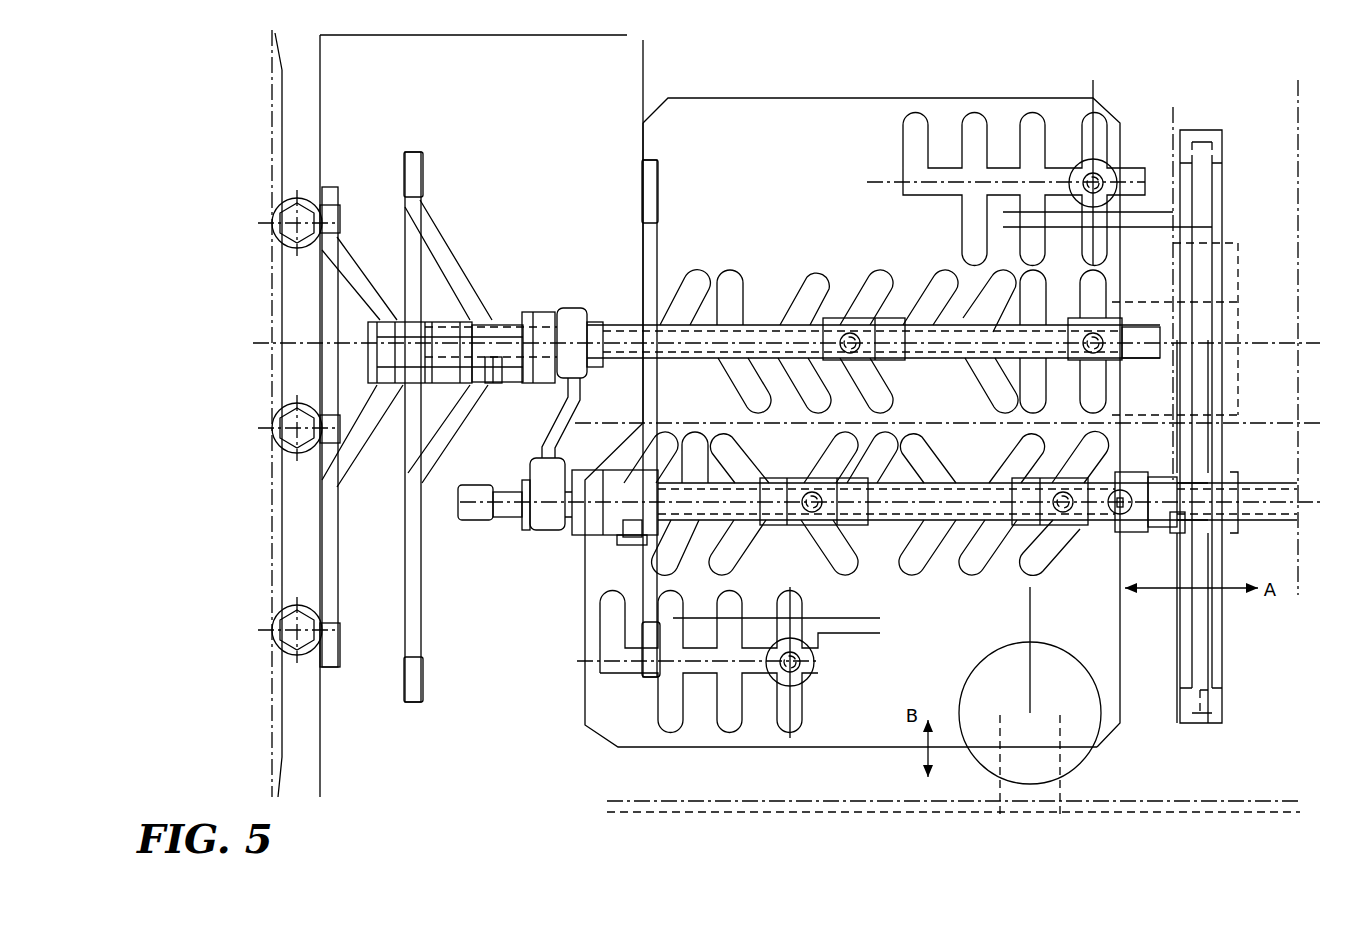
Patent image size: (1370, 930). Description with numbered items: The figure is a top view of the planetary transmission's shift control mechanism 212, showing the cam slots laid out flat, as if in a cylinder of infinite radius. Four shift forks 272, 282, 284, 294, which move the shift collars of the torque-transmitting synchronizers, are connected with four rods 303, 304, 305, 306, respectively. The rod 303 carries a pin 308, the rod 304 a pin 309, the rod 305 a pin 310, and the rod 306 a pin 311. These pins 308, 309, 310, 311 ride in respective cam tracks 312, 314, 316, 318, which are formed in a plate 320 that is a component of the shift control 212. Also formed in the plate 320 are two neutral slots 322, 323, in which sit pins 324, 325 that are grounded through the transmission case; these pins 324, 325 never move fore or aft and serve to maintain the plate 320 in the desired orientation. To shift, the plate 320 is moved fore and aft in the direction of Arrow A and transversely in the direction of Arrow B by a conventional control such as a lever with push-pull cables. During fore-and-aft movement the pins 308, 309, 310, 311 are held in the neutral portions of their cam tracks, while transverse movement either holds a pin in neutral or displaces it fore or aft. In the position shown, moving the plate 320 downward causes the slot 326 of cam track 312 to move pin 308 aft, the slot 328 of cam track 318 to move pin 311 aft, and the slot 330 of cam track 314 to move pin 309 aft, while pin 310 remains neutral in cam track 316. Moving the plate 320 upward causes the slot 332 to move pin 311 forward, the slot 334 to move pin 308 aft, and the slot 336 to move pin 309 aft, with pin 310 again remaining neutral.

The shift control mechanism 212 is at (1135, 723).
The shift fork 272 is at (642, 268).
The shift fork 282 is at (420, 620).
The shift fork 284 is at (336, 553).
The shift fork 294 is at (1187, 450).
The rod 303 is at (797, 480).
The rod 304 is at (480, 362).
The rod 305 is at (368, 347).
The rod 306 is at (1265, 483).
The pin 308 is at (822, 507).
The pin 309 is at (848, 335).
The pin 310 is at (1100, 340).
The pin 311 is at (1072, 508).
The cam track 312 is at (802, 540).
The cam track 314 is at (777, 295).
The cam track 316 is at (968, 295).
The cam track 318 is at (1002, 547).
The plate 320 is at (1124, 657).
The neutral slot 322 is at (806, 697).
The neutral slot 323 is at (905, 142).
The pin 324 is at (802, 665).
The pin 325 is at (1100, 181).
The slot 326 is at (824, 455).
The slot 328 is at (1110, 442).
The slot 330 is at (885, 316).
The slot 332 is at (1040, 572).
The slot 334 is at (850, 572).
The slot 336 is at (896, 403).